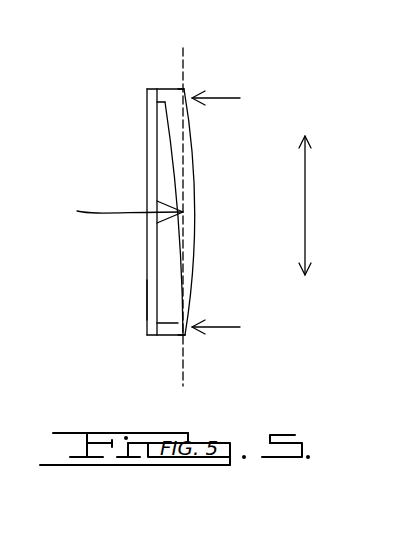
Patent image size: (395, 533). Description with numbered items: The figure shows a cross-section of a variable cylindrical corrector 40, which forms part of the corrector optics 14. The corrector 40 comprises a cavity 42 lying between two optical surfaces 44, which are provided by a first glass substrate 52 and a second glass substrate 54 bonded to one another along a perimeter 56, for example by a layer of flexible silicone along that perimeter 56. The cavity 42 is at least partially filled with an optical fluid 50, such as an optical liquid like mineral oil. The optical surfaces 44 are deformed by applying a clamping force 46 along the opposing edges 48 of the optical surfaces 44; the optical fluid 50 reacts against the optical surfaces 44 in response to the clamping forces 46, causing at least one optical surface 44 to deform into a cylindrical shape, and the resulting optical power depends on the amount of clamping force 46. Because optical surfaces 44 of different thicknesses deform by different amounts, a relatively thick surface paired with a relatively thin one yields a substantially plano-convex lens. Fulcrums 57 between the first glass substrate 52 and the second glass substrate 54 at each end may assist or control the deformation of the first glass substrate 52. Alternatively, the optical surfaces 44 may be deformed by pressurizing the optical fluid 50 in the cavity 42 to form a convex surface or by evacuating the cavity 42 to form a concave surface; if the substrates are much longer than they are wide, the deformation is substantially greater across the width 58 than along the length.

The corrector optics 14 is at (178, 205).
The variable cylindrical corrector 40 is at (178, 205).
The cavity 42 is at (157, 240).
The optical surfaces 44 is at (147, 158).
The clamping force 46 is at (229, 97).
The opposing edges 48 is at (180, 89).
The optical fluid 50 is at (176, 258).
The first glass substrate 52 is at (192, 289).
The second glass substrate 54 is at (147, 297).
The perimeter 56 is at (163, 89).
The fulcrums 57 is at (116, 209).
The width 58 is at (305, 216).